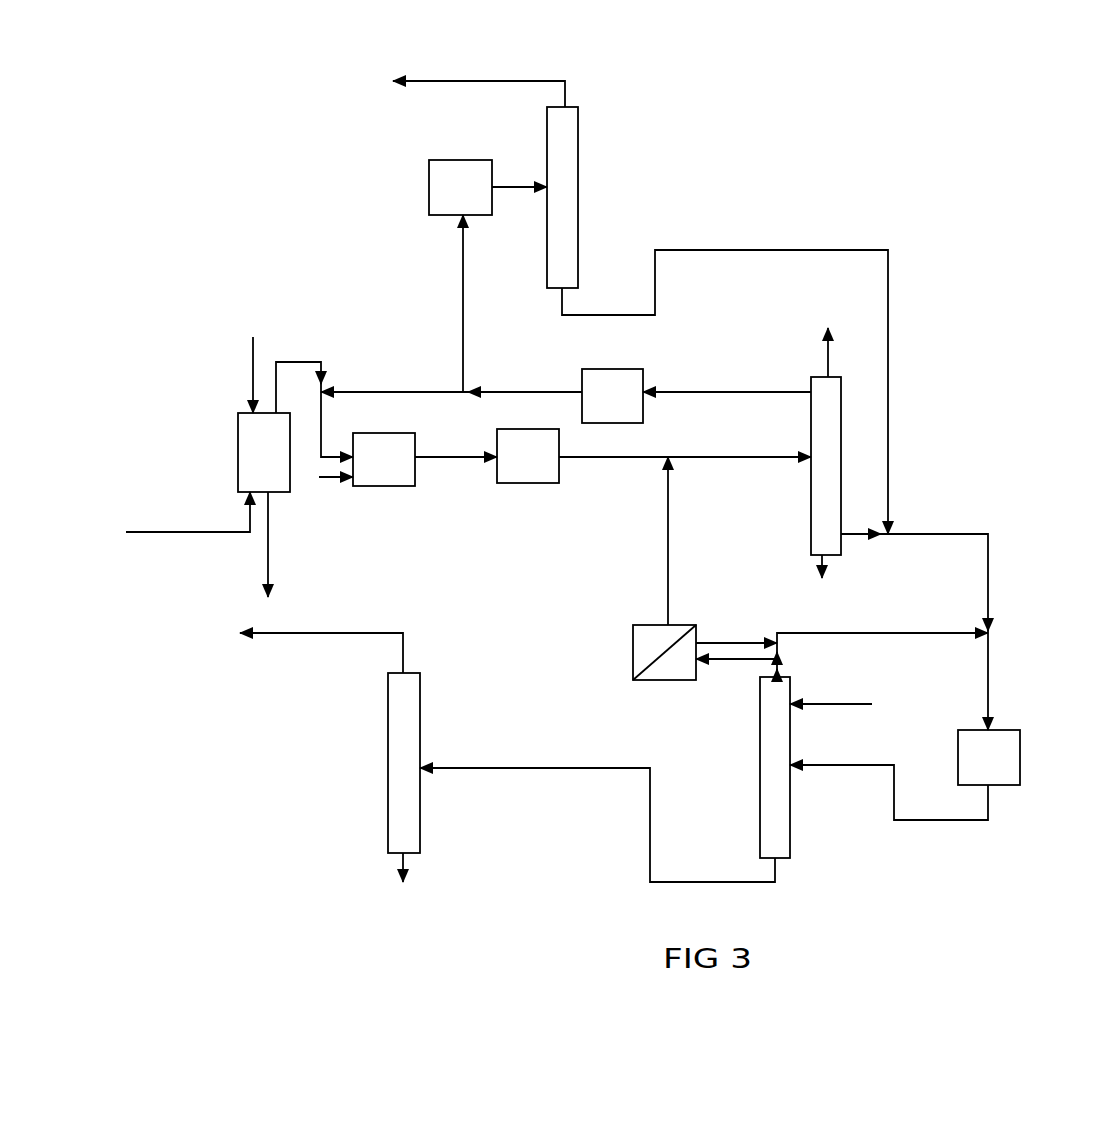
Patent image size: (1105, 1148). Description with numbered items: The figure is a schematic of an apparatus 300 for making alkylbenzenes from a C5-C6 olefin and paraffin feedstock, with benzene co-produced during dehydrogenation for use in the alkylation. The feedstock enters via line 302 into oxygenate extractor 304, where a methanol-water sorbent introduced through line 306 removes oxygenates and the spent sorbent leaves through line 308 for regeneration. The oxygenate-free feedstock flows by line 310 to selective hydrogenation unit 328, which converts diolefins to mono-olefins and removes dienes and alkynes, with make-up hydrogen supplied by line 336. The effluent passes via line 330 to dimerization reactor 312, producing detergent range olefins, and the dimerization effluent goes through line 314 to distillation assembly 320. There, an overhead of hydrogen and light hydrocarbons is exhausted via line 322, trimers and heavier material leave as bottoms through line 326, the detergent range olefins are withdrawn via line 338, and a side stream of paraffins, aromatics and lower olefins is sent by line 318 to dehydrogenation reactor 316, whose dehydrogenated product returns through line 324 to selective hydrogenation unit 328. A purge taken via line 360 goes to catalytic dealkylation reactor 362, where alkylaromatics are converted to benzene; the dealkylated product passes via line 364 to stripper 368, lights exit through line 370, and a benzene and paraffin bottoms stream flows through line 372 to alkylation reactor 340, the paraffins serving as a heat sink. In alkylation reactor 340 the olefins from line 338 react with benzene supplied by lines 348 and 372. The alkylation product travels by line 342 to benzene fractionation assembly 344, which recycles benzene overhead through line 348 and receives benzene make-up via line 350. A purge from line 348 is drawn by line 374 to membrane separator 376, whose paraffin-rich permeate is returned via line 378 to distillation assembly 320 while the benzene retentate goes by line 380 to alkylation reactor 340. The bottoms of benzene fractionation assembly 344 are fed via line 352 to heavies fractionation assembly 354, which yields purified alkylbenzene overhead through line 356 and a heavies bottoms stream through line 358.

The apparatus 300 is at (178, 152).
The line 302 is at (162, 531).
The oxygenate extractor 304 is at (253, 458).
The line 306 is at (250, 365).
The line 308 is at (266, 555).
The line 310 is at (297, 362).
The dimerization reactor 312 is at (535, 467).
The line 314 is at (690, 460).
The dehydrogenation reactor 316 is at (607, 392).
The line 318 is at (730, 392).
The distillation assembly 320 is at (818, 468).
The line 322 is at (825, 360).
The line 324 is at (425, 389).
The line 326 is at (818, 562).
The selective hydrogenation unit 328 is at (397, 477).
The line 330 is at (460, 458).
The line 336 is at (328, 482).
The line 338 is at (992, 660).
The alkylation reactor 340 is at (1000, 768).
The line 342 is at (933, 822).
The benzene fractionation assembly 344 is at (772, 798).
The line 348 is at (858, 635).
The line 350 is at (830, 702).
The line 352 is at (648, 847).
The heavies fractionation assembly 354 is at (398, 790).
The line 356 is at (345, 635).
The line 358 is at (402, 865).
The line 360 is at (460, 275).
The catalytic dealkylation reactor 362 is at (453, 188).
The line 364 is at (527, 183).
The stripper 368 is at (563, 205).
The line 370 is at (445, 84).
The line 372 is at (730, 250).
The line 374 is at (740, 660).
The membrane separator 376 is at (642, 650).
The line 378 is at (667, 560).
The line 380 is at (737, 642).